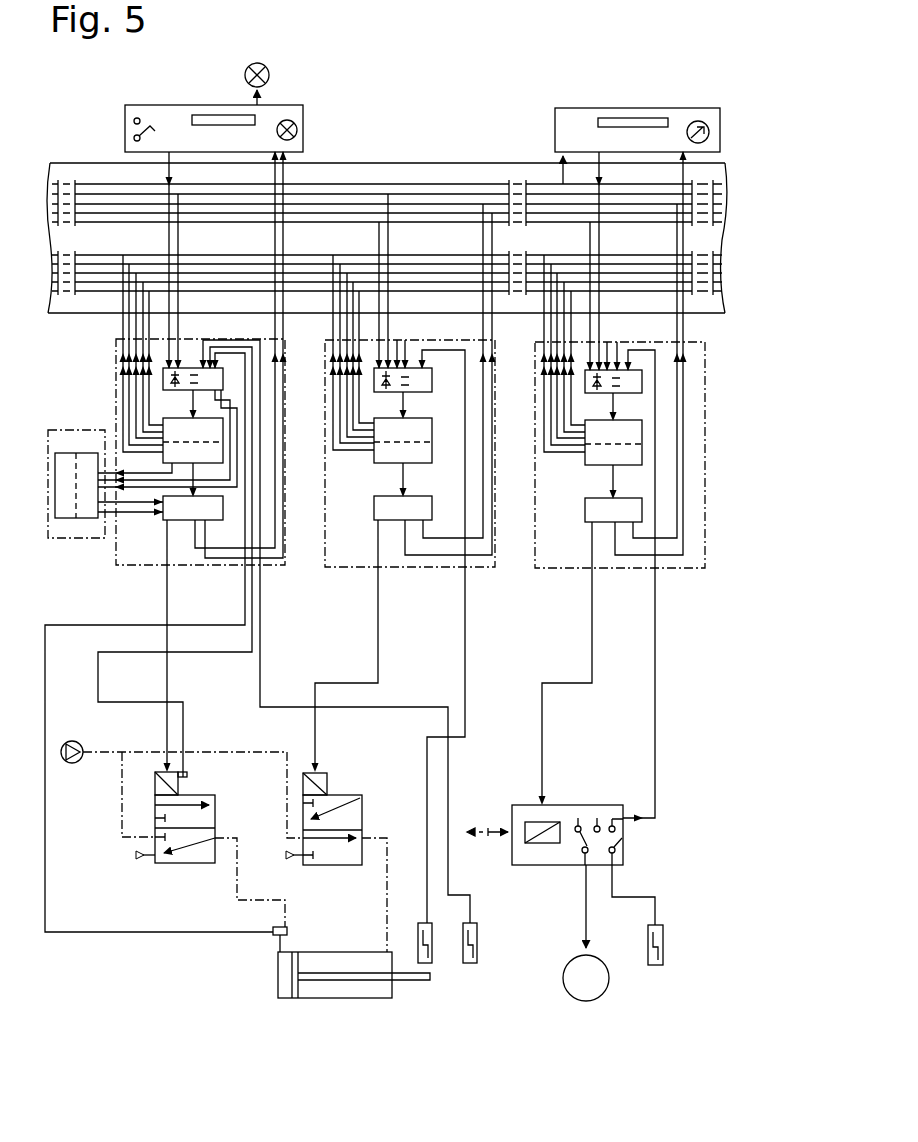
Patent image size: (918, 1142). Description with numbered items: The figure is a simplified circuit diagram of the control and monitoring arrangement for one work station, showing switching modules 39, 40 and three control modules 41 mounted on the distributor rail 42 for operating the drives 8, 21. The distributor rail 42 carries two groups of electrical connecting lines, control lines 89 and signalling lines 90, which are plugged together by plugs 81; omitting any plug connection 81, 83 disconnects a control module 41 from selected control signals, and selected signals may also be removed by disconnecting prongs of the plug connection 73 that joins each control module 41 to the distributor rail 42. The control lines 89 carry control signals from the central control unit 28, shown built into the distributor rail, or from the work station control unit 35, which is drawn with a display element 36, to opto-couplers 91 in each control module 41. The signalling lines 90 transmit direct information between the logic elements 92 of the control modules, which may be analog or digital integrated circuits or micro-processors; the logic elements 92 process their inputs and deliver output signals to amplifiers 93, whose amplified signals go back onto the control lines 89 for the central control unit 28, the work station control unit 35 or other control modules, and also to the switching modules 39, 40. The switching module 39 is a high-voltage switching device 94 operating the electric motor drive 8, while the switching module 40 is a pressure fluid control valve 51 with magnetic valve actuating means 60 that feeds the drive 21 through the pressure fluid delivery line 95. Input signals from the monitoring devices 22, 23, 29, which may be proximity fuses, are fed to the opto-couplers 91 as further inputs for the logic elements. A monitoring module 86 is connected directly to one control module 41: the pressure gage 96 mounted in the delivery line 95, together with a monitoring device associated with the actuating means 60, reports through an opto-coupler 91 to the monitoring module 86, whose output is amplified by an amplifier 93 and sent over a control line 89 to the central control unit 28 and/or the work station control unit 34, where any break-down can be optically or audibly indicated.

The distributor rail 42 is at (90, 163).
The plug connection 83 is at (65, 282).
The plug 81 is at (505, 180).
The work station control unit 35 is at (305, 130).
The display 36 is at (203, 118).
The central control unit 28 is at (585, 125).
The work station control unit 34 is at (655, 122).
The control module 41 is at (191, 575).
The plug connection 73 is at (202, 326).
The signalling lines 90 is at (213, 290).
The control lines 89 is at (335, 222).
The opto-coupler 91 is at (223, 380).
The logic element 92 is at (360, 458).
The amplifier 93 is at (207, 512).
The monitoring module 86 is at (71, 528).
The switching module 40 is at (218, 784).
The magnetic valve actuating means 60 is at (146, 785).
The pressure fluid control valve 51 is at (213, 823).
The pressure fluid delivery line 95 is at (237, 868).
The pressure gage 96 is at (275, 937).
The drive 21 is at (317, 1000).
The monitoring device 23 is at (423, 977).
The monitoring device 22 is at (468, 965).
The switching module 39 is at (568, 797).
The high-voltage switching device 94 is at (568, 817).
The monitoring device 29 is at (660, 935).
The drive 8 is at (592, 998).